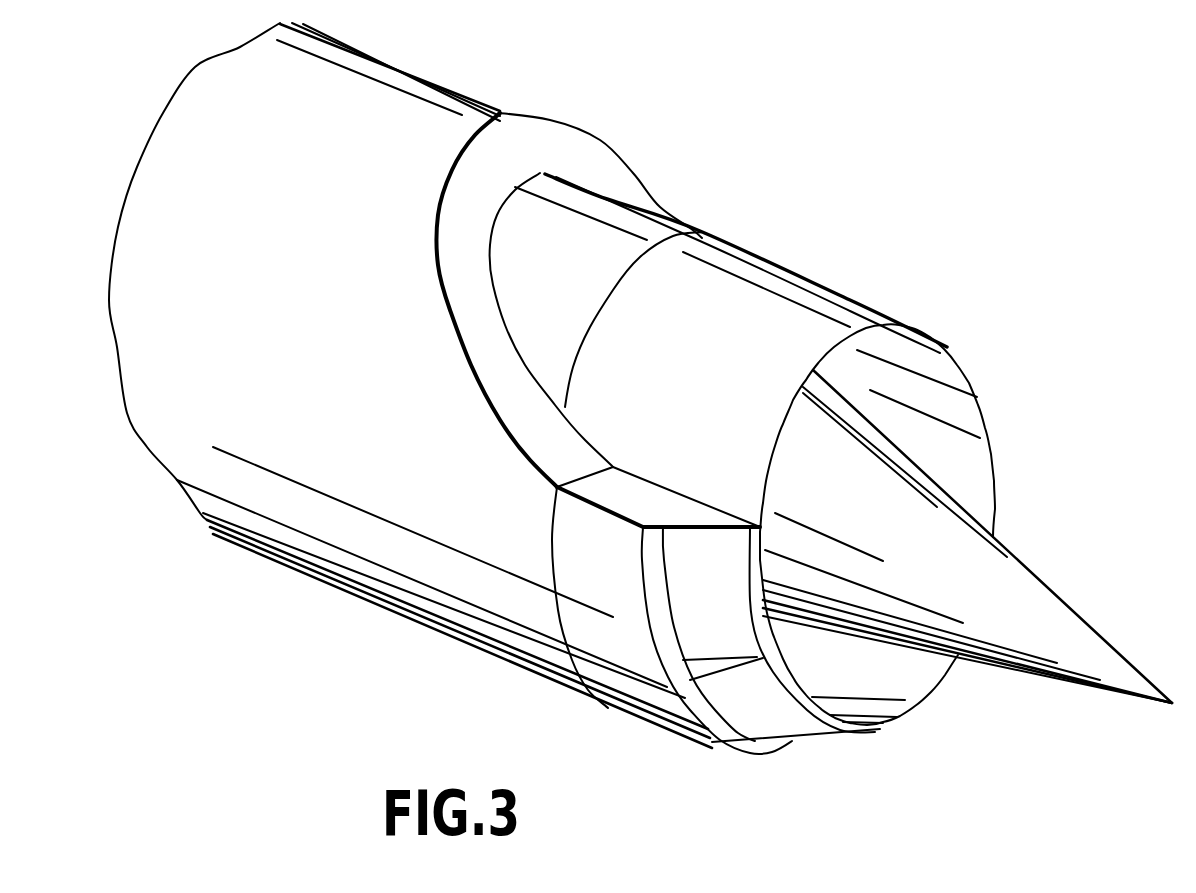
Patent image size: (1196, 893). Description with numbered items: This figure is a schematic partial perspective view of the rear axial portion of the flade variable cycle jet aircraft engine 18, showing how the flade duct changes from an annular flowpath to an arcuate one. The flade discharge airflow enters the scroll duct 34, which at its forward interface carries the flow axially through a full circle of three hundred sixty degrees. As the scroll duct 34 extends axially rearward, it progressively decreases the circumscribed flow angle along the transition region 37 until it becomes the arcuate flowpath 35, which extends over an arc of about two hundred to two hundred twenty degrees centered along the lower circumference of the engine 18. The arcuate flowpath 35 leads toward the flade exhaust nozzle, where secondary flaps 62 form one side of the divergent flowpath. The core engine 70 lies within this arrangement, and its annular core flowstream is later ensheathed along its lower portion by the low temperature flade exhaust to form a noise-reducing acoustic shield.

The flade variable cycle jet aircraft engine 18 is at (745, 167).
The scroll duct 34 is at (383, 70).
The arcuate flowpath 35 is at (668, 695).
The transition region 37 is at (450, 317).
The secondary flaps 62 is at (790, 727).
The core engine 70 is at (793, 280).